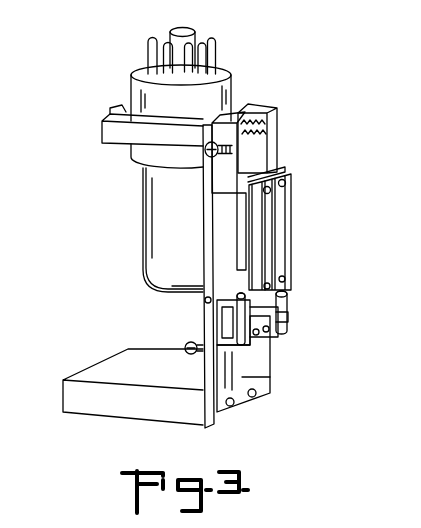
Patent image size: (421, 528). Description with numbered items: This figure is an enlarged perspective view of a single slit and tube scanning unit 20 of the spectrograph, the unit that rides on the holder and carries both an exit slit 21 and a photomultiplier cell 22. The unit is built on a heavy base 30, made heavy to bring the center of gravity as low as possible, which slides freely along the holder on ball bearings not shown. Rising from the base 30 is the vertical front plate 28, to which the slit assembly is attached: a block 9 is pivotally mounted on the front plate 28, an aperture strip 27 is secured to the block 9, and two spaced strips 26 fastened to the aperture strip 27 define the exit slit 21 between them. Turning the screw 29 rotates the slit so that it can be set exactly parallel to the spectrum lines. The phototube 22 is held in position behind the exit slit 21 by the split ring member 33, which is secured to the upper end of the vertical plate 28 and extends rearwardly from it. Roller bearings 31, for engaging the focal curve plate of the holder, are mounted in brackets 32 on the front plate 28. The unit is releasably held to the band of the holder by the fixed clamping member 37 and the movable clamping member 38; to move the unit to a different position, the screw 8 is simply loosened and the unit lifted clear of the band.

The screw 8 is at (192, 354).
The block 9 is at (261, 173).
The unit 20 is at (133, 424).
The exit slit 21 is at (272, 257).
The photomultiplier cell 22 is at (147, 218).
The spaced strips 26 is at (280, 235).
The aperture strip 27 is at (285, 170).
The vertical front plate 28 is at (206, 302).
The screw 29 is at (208, 159).
The base 30 is at (106, 366).
The roller bearings 31 is at (263, 333).
The brackets 32 is at (280, 295).
The split ring member 33 is at (115, 139).
The fixed clamping member 37 is at (262, 364).
The movable clamping member 38 is at (240, 394).